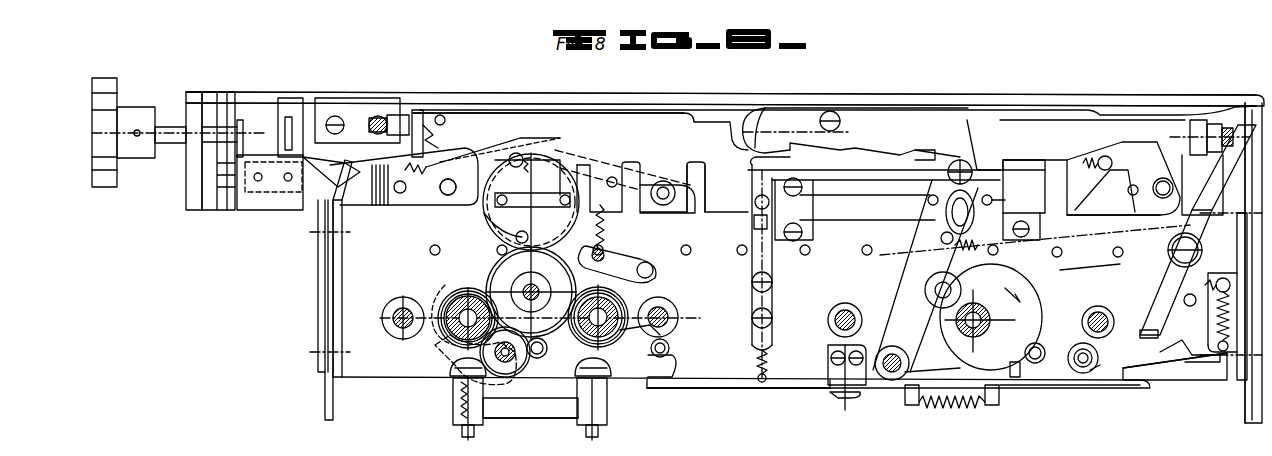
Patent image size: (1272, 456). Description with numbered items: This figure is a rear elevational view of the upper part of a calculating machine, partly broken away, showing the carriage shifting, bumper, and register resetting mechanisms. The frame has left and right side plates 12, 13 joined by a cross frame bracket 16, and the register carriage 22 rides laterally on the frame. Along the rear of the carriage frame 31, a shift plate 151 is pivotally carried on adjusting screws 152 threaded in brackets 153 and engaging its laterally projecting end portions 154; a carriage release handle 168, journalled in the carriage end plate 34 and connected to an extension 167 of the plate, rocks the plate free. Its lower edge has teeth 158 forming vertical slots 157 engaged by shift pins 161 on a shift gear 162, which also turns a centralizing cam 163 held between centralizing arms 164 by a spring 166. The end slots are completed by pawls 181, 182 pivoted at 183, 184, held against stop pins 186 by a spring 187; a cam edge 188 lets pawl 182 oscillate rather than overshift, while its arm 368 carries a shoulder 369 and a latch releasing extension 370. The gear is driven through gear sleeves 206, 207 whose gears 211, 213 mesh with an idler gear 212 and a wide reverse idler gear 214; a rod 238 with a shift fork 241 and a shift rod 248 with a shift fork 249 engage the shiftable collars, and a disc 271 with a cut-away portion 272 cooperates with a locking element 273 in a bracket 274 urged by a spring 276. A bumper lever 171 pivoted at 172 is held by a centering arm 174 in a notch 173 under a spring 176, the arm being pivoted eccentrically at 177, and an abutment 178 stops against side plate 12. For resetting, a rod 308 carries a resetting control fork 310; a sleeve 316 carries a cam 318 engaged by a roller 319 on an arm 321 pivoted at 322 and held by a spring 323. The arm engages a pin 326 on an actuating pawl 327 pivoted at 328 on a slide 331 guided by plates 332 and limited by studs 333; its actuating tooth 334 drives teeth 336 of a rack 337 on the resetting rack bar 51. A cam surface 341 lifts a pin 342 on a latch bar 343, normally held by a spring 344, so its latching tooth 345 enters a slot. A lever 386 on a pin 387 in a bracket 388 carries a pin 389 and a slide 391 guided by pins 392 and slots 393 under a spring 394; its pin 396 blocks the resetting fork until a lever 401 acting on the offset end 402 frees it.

The left side plate 12 is at (1262, 395).
The right side plate 13 is at (325, 397).
The cross frame bracket 16 is at (362, 380).
The register carriage 22 is at (955, 94).
The carriage frame 31 is at (578, 101).
The carriage end plate 34 is at (194, 92).
The resetting rack bar 51 is at (755, 112).
The carriage shift plate 151 is at (513, 113).
The adjusting screws 152 is at (380, 110).
The brackets 153 is at (342, 98).
The laterally projecting end portions 154 is at (424, 112).
The vertical slots 157 is at (702, 215).
The teeth 158 is at (628, 215).
The shift pins 161 is at (531, 238).
The shift gear 162 is at (488, 222).
The centralizing cam 163 is at (490, 238).
The centralizing arms 164 is at (606, 165).
The spring 166 is at (592, 240).
The extension 167 is at (241, 118).
The carriage release handle 168 is at (112, 95).
The bumper lever 171 is at (1230, 260).
The pivot 172 is at (1168, 247).
The notch 173 is at (1200, 378).
The centering arm 174 is at (1180, 378).
The spring 176 is at (1215, 370).
The eccentric pivot 177 is at (1093, 378).
The abutment 178 is at (1236, 205).
The pawl 181 is at (1152, 145).
The pawl 182 is at (412, 205).
The pivot 183 is at (1163, 172).
The pivot 184 is at (448, 179).
The stop pins 186 is at (480, 175).
The spring 187 is at (530, 153).
The cam edge 188 is at (537, 186).
The gear sleeve 206 is at (655, 275).
The gear sleeve 207 is at (428, 302).
The gear 211 is at (610, 385).
The idler gear 212 is at (496, 280).
The gear 213 is at (458, 290).
The wide reverse idler gear 214 is at (520, 395).
The rod 238 is at (563, 398).
The shift fork 241 is at (510, 293).
The shift rod 248 is at (676, 343).
The shift fork 249 is at (678, 315).
The disc 271 is at (440, 280).
The cut-away portion 272 is at (430, 345).
The locking element 273 is at (445, 380).
The bracket 274 is at (500, 423).
The spring 276 is at (452, 398).
The rod 308 is at (1042, 350).
The resetting control fork 310 is at (1038, 318).
The sleeve 316 is at (990, 292).
The cam 318 is at (1025, 283).
The roller 319 is at (920, 280).
The arm 321 is at (905, 288).
The pivot 322 is at (895, 350).
The spring 323 is at (1080, 270).
The pin 326 is at (940, 230).
The actuating pawl 327 is at (958, 160).
The pivot 328 is at (978, 160).
The slide 331 is at (832, 225).
The plates 332 is at (793, 245).
The studs 333 is at (928, 202).
The actuating tooth 334 is at (925, 150).
The teeth 336 is at (862, 148).
The rack 337 is at (866, 108).
The cam surface 341 is at (752, 206).
The pin 342 is at (755, 200).
The latch bar 343 is at (770, 300).
The spring 344 is at (752, 360).
The latching tooth 345 is at (752, 225).
The lever 386 is at (748, 393).
The pin 387 is at (838, 398).
The bracket 388 is at (826, 362).
The pin 389 is at (668, 360).
The slide 391 is at (1065, 390).
The pins 392 is at (905, 405).
The slots 393 is at (930, 365).
The spring 394 is at (930, 410).
The pin 396 is at (1022, 385).
The lever 401 is at (1160, 296).
The offset end 402 is at (1148, 330).
The shoulder 369 is at (325, 195).
The arm 368 is at (356, 200).
The latch releasing extension 370 is at (300, 112).